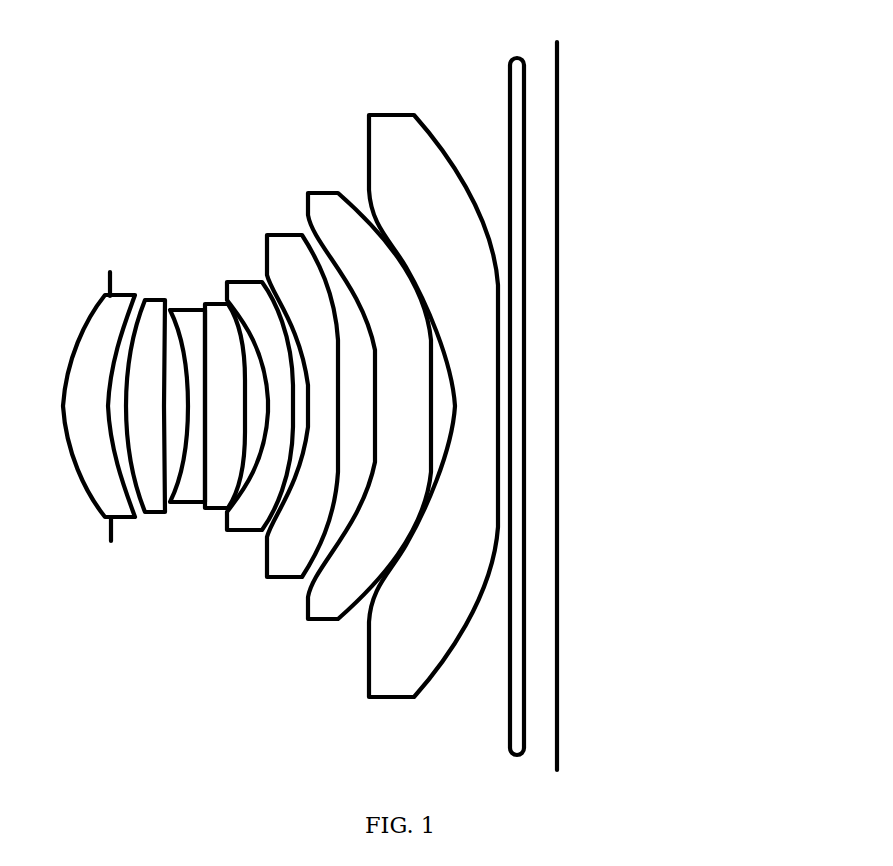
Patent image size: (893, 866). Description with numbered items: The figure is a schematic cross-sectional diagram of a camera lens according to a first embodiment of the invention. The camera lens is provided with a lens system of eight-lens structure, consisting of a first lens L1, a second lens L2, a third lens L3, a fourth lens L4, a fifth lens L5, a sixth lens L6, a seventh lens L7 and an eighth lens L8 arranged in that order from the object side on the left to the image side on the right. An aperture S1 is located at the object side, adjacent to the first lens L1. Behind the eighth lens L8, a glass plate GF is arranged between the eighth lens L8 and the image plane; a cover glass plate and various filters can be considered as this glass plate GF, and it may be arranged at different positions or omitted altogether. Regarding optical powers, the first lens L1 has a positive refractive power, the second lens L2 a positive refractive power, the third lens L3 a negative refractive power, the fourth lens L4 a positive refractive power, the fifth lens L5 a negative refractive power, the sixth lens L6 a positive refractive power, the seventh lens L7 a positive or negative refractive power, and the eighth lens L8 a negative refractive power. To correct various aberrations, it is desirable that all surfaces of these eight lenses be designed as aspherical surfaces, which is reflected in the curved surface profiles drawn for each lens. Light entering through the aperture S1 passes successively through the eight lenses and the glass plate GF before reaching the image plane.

The aperture S1 is at (107, 268).
The first lens L1 is at (99, 398).
The second lens L2 is at (145, 394).
The third lens L3 is at (184, 389).
The fourth lens L4 is at (218, 392).
The fifth lens L5 is at (259, 395).
The sixth lens L6 is at (302, 395).
The seventh lens L7 is at (369, 391).
The eighth lens L8 is at (433, 392).
The glass plate GF is at (513, 393).
The element image plane is at (564, 291).